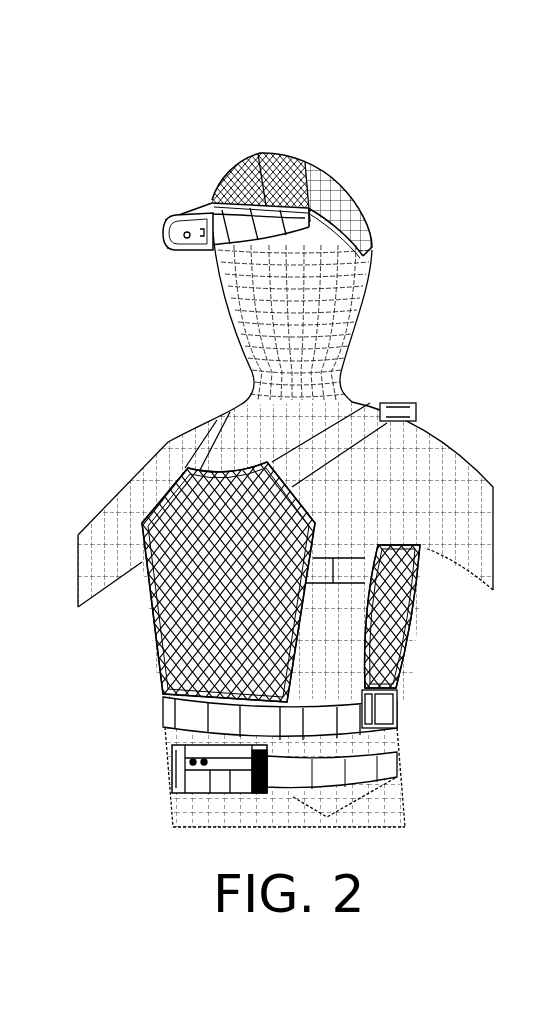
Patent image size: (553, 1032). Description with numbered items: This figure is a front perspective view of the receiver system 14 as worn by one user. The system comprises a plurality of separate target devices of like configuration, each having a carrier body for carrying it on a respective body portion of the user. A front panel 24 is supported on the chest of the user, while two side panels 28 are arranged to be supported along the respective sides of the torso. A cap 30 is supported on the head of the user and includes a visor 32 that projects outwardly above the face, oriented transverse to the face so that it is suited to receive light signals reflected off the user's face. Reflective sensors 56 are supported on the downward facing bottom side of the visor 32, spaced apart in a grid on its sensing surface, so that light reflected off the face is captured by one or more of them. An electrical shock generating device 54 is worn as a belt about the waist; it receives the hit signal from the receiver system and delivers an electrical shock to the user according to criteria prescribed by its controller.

The wearable garment system 14 is at (310, 97).
The cap 30 is at (220, 188).
The visor 32 is at (162, 231).
The reflective sensors 56 is at (188, 243).
The front panel 24 is at (170, 493).
The side panels 28 is at (410, 622).
The electrical shock generating device 54 is at (172, 778).